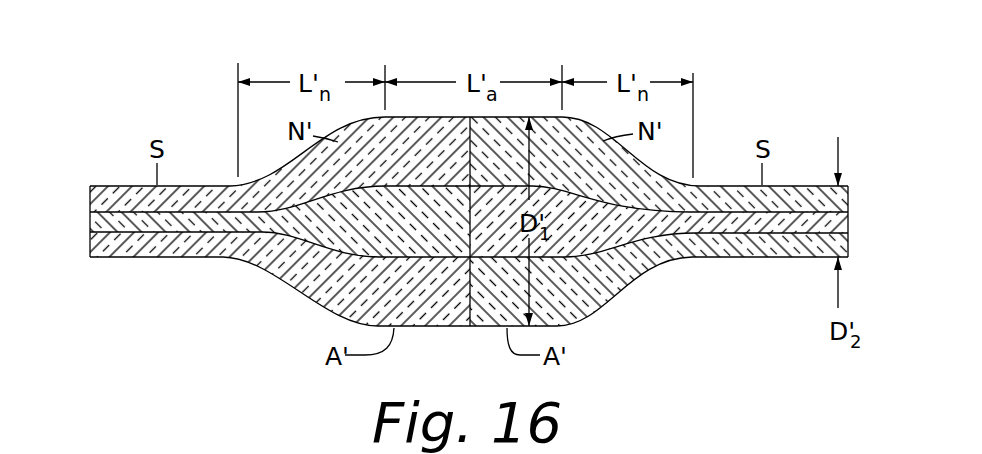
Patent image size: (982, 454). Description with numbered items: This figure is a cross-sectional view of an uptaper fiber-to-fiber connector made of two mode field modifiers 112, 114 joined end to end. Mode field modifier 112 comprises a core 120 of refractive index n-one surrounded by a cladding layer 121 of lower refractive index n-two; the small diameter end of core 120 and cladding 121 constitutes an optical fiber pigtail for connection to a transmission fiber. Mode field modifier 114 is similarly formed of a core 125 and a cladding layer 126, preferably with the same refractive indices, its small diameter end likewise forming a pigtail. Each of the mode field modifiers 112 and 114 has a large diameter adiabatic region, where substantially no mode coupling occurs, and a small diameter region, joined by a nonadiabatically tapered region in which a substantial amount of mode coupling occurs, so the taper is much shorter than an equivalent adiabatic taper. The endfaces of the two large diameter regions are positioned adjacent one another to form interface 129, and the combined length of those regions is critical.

The core 120 is at (96, 220).
The core 125 is at (838, 226).
The cladding layer 121 is at (157, 260).
The cladding layer 126 is at (764, 259).
The mode field modifier 112 is at (312, 298).
The mode field modifier 114 is at (618, 298).
The interface 129 is at (490, 326).